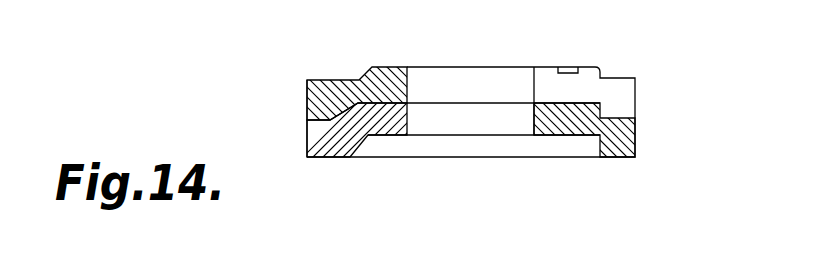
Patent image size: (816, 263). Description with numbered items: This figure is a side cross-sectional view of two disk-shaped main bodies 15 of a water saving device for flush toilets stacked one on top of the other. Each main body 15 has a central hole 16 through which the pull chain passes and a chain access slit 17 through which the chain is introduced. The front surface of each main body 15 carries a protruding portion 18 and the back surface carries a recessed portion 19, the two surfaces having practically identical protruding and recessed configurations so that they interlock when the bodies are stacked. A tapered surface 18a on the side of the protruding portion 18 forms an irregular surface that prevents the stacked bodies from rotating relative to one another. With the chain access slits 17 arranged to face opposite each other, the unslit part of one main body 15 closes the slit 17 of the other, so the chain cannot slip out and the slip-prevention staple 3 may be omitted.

The main body 15 is at (305, 103).
The hole 16 is at (408, 133).
The chain access slit 17 is at (602, 92).
The protruding portion 18 is at (545, 66).
The tapered surface 18a is at (367, 70).
The recessed portion 19 is at (393, 137).
The slip-prevention staple 3 is at (567, 66).